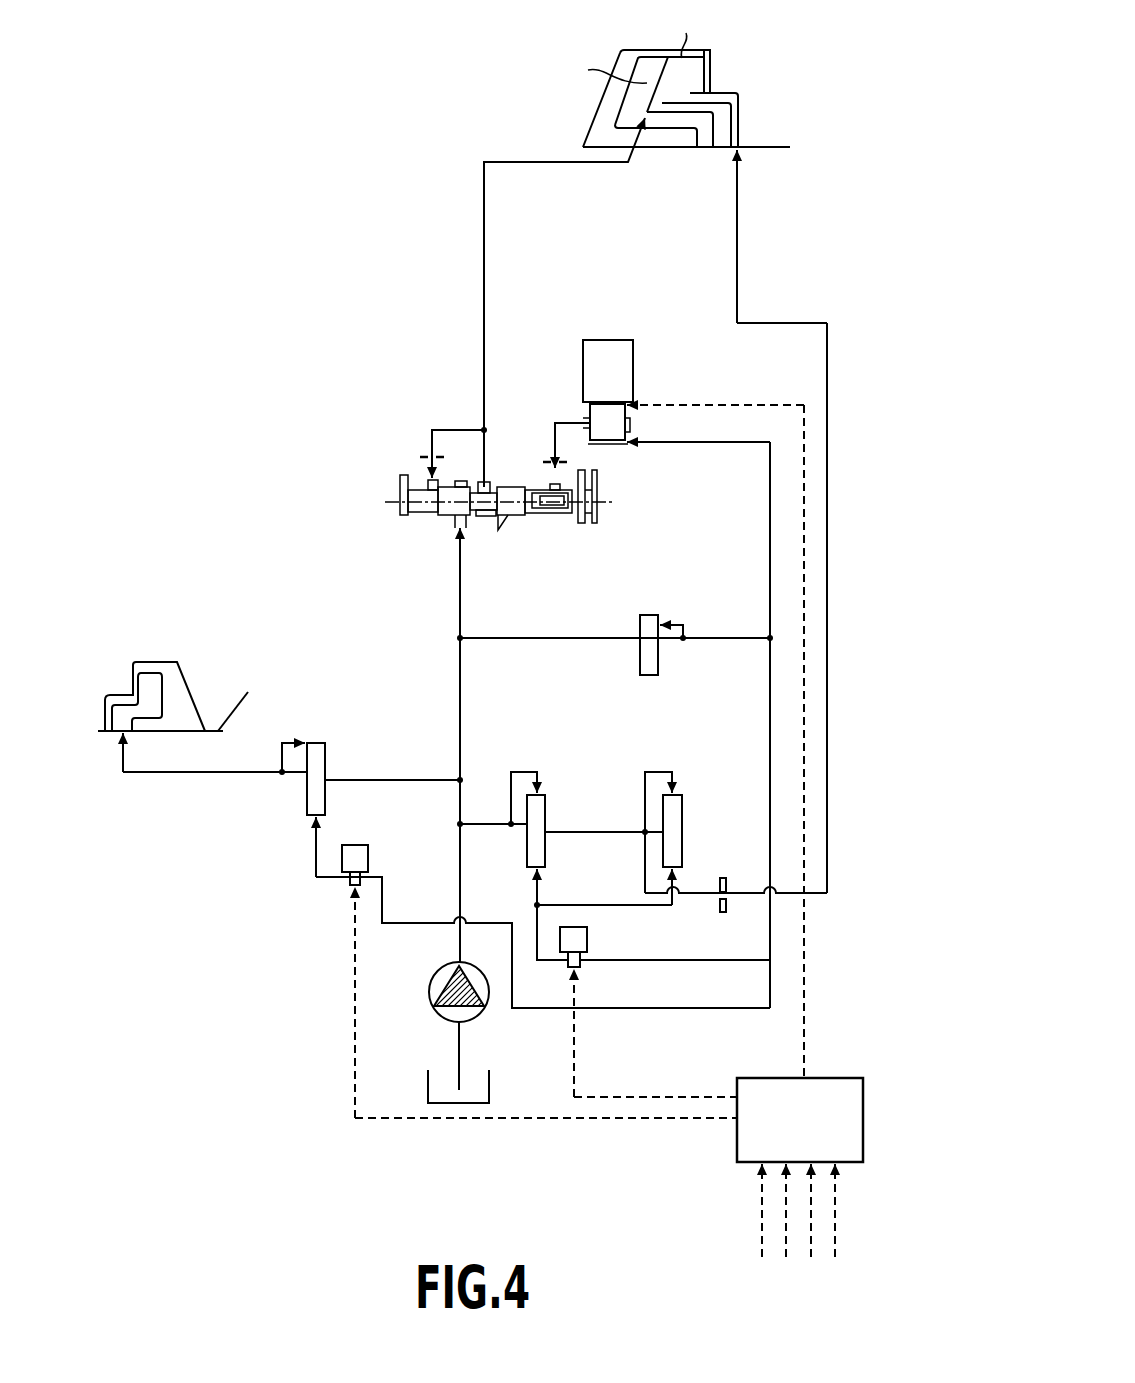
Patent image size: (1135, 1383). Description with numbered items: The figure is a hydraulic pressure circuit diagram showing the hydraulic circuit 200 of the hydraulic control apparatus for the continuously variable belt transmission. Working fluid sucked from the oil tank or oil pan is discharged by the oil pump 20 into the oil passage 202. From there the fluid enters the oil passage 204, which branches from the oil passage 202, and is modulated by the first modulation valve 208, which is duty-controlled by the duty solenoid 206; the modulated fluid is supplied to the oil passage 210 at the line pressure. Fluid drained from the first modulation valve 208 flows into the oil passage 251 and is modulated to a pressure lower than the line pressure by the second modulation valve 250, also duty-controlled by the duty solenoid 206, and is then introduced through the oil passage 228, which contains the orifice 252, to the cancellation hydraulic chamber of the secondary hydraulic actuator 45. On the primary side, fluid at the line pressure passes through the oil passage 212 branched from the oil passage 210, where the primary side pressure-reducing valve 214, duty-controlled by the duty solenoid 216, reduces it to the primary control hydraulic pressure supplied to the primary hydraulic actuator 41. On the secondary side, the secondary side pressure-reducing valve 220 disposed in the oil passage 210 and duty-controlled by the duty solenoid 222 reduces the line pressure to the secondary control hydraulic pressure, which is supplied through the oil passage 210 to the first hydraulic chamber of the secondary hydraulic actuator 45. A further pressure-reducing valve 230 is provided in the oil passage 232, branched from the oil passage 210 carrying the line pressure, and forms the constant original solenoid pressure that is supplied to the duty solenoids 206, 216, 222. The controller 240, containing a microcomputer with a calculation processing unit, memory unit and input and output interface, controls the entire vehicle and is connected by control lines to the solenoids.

The oil pump 20 is at (430, 995).
The primary hydraulic actuator 41 is at (112, 676).
The secondary hydraulic actuator 45 is at (752, 95).
The hydraulic circuit 200 is at (845, 490).
The oil passage 202 is at (460, 878).
The oil passage 204 is at (488, 822).
The duty solenoid 206 is at (587, 940).
The first modulation valve 208 is at (545, 812).
The oil passage 210 is at (484, 224).
The oil passage 212 is at (252, 772).
The primary side pressure-reducing valve 214 is at (325, 800).
The duty solenoid 216 is at (342, 860).
The secondary side pressure-reducing valve 220 is at (417, 517).
The duty solenoid 222 is at (633, 362).
The oil passage 228 is at (737, 250).
The pressure-reducing valve 230 is at (658, 660).
The oil passage 232 is at (565, 638).
The controller 240 is at (737, 1152).
The second modulation valve 250 is at (682, 800).
The oil passage 251 is at (608, 832).
The orifice 252 is at (727, 867).